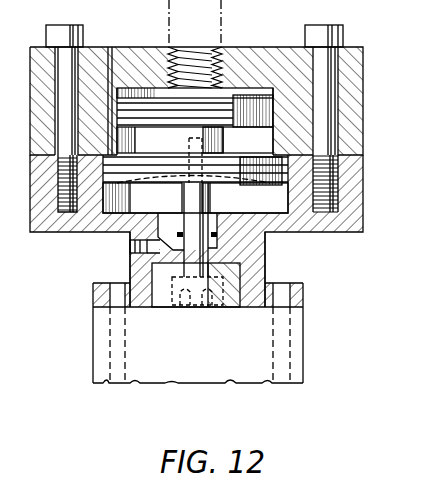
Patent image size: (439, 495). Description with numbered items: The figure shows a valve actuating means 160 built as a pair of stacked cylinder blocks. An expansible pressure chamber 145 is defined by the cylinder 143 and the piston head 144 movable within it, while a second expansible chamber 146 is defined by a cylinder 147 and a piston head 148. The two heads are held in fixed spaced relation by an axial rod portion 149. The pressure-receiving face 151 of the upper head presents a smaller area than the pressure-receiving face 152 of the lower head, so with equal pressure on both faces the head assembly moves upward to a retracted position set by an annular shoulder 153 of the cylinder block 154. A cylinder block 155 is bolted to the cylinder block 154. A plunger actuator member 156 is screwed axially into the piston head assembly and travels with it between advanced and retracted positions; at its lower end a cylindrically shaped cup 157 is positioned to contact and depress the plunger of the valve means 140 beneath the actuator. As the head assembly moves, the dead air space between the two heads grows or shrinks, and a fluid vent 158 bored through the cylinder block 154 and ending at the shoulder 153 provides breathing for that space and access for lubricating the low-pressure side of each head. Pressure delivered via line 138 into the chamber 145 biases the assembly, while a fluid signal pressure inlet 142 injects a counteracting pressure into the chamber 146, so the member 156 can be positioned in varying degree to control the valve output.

The line 138 is at (221, 43).
The valve means 140 is at (310, 360).
The fluid signal pressure inlet 142 is at (130, 246).
The cylinder 143 is at (271, 138).
The piston head 144 is at (217, 140).
The expansible pressure chamber 145 is at (160, 92).
The second expansible chamber 146 is at (284, 197).
The cylinder 147 is at (240, 214).
The piston head 148 is at (142, 198).
The axial rod portion 149 is at (177, 140).
The pressure-receiving face 151 is at (233, 91).
The pressure-receiving face 152 is at (195, 183).
The annular shoulder 153 is at (341, 139).
The cylinder block 154 is at (363, 67).
The cylinder block 155 is at (360, 191).
The plunger actuator member 156 is at (200, 246).
The cup 157 is at (223, 306).
The fluid vent 158 is at (110, 47).
The valve assembly 160 is at (331, 250).